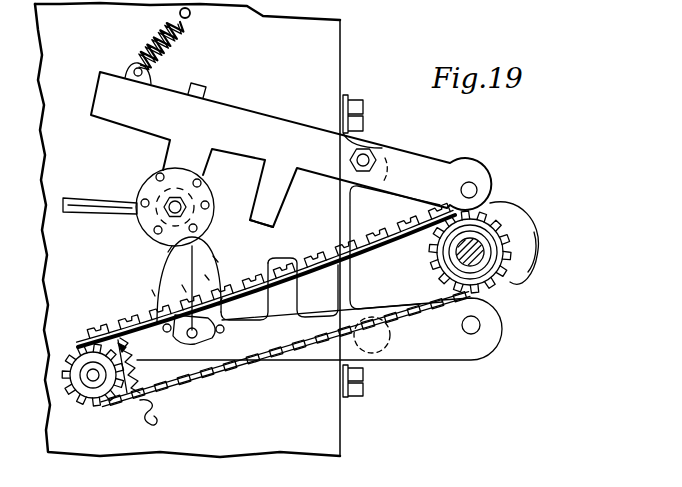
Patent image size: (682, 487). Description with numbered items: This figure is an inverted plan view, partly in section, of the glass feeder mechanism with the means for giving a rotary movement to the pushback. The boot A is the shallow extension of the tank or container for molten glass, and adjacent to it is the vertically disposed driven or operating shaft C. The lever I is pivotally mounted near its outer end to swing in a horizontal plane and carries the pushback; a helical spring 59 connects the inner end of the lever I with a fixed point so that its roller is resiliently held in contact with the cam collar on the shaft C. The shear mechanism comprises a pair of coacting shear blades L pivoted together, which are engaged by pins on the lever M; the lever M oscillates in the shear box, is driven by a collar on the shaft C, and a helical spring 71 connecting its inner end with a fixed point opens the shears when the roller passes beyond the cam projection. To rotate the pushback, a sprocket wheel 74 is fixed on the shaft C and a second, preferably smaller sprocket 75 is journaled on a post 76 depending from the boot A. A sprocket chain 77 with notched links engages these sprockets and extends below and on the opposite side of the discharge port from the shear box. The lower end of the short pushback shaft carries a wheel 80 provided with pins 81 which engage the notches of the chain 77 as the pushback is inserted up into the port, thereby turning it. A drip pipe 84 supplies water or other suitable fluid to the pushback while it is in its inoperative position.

The helical spring 59 is at (177, 47).
The drip pipe 84 is at (88, 200).
The pins 81 is at (201, 184).
The wheel 80 is at (245, 226).
The sprocket wheel 74 is at (433, 256).
The post 76 is at (92, 366).
The second sprocket 75 is at (95, 398).
The helical spring 71 is at (149, 410).
The sprocket chain 77 is at (237, 387).
The boot A is at (208, 230).
The lever I is at (291, 145).
The shear blades L is at (152, 280).
The lever M is at (209, 334).
The operating shaft C is at (481, 263).